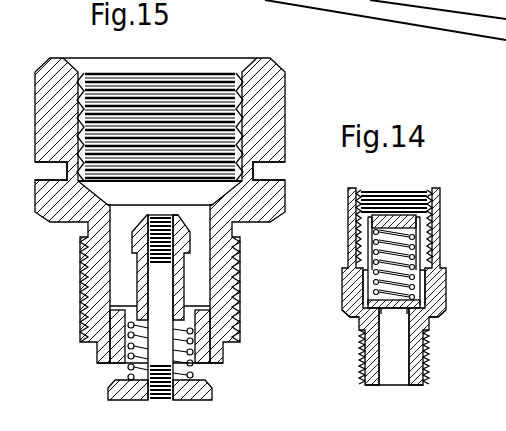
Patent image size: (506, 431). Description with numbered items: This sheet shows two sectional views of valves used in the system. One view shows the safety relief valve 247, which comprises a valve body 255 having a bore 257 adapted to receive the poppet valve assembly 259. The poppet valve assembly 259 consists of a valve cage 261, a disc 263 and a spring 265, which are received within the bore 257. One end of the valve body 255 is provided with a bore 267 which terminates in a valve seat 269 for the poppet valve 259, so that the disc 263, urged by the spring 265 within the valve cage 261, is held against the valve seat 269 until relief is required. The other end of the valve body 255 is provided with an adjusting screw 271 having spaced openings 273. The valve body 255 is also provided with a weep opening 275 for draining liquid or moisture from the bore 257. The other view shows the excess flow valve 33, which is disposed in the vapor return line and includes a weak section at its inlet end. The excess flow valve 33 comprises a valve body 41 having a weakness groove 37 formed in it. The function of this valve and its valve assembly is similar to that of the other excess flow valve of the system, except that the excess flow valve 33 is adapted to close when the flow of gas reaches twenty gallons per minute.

In FIG. 15, the excess flow valve 33 is at (280, 93).
In FIG. 15, the weakness groove 37 is at (66, 161).
In FIG. 15, the valve body 41 is at (87, 238).
In FIG. 14, the safety relief valve 247 is at (442, 212).
In FIG. 14, the valve body 255 is at (352, 243).
In FIG. 14, the bore 257 is at (428, 253).
In FIG. 14, the poppet valve assembly 259 is at (363, 278).
In FIG. 14, the valve cage 261 is at (424, 278).
In FIG. 14, the disc 263 is at (437, 312).
In FIG. 14, the spring 265 is at (352, 297).
In FIG. 14, the bore 267 is at (378, 381).
In FIG. 14, the valve seat 269 is at (403, 322).
In FIG. 14, the adjusting screw 271 is at (387, 198).
In FIG. 14, the spaced openings 273 is at (353, 215).
In FIG. 14, the weep opening 275 is at (343, 314).